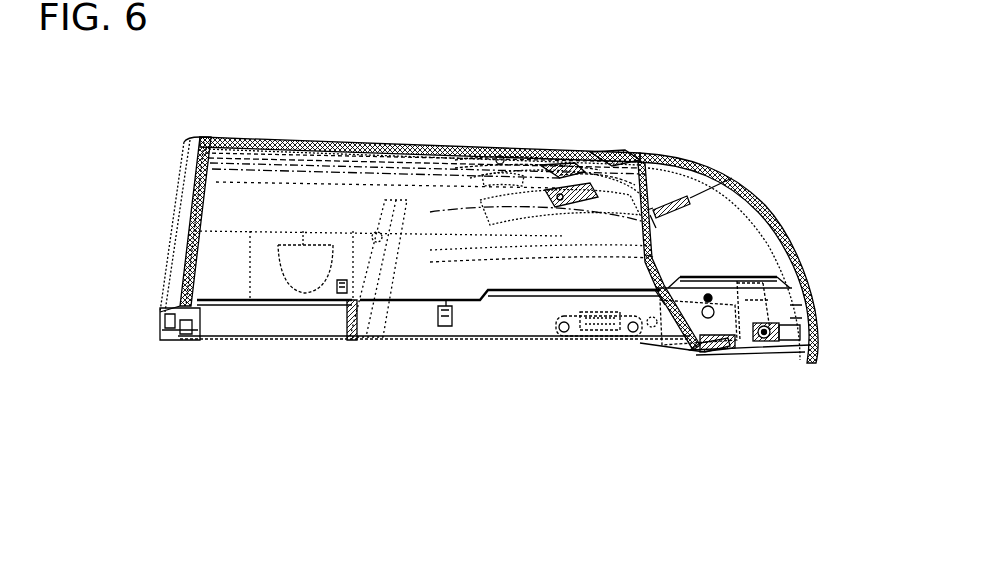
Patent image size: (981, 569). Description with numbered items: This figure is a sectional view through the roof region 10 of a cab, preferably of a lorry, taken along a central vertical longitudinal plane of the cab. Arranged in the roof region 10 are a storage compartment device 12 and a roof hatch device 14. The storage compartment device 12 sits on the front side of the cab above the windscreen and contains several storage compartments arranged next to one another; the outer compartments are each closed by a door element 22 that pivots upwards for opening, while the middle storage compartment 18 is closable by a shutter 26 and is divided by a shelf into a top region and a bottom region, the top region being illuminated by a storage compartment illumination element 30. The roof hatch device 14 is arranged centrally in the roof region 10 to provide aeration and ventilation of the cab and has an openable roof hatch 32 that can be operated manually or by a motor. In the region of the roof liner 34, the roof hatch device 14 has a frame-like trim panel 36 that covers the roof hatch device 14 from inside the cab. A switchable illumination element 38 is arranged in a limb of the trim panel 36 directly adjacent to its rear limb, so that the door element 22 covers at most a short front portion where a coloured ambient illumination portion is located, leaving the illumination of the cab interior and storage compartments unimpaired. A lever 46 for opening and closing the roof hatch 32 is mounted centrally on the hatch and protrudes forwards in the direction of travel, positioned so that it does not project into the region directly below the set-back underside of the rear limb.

The roof region 10 is at (510, 67).
The storage compartment device 12 is at (637, 293).
The roof hatch device 14 is at (492, 152).
The middle storage compartment 18 is at (750, 259).
The door element 22 is at (580, 168).
The shutter 26 is at (642, 239).
The storage compartment illumination element 30 is at (690, 211).
The roof hatch 32 is at (592, 156).
The roof liner 34 is at (280, 146).
The trim panel 36 is at (495, 181).
The illumination element 38 is at (553, 198).
The lever 46 is at (500, 190).